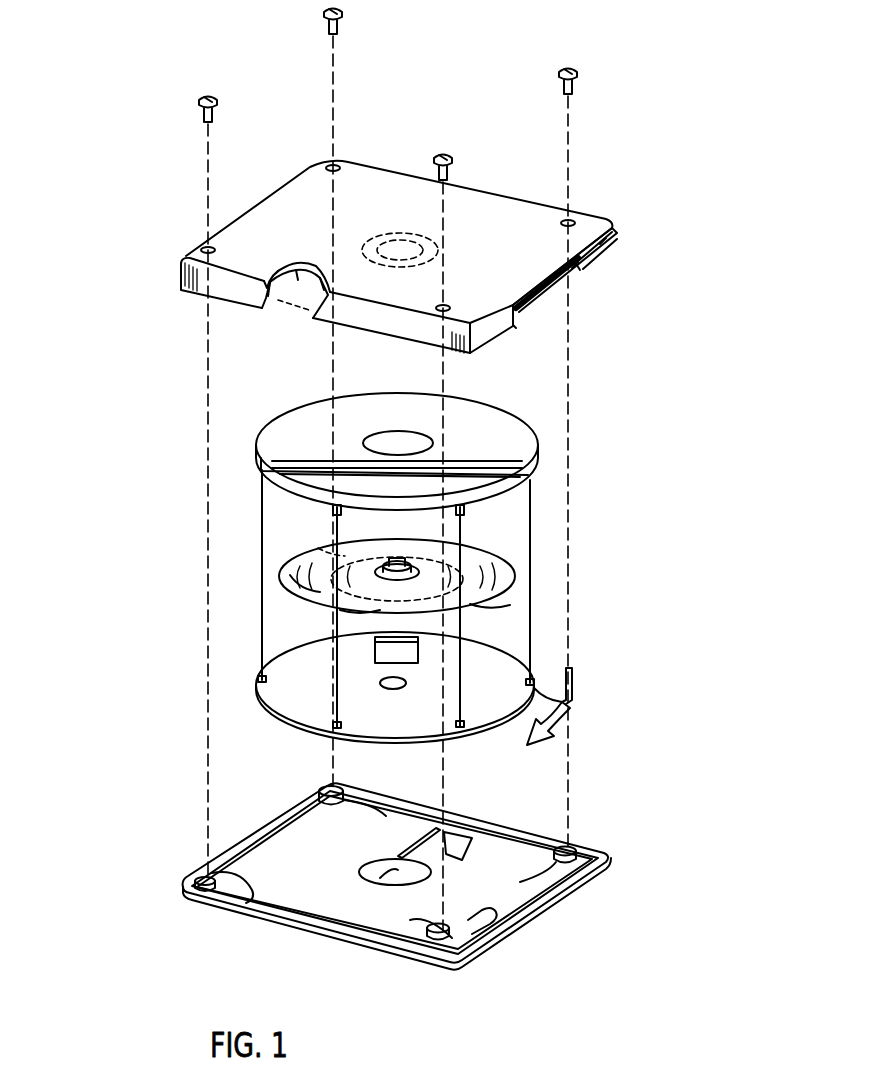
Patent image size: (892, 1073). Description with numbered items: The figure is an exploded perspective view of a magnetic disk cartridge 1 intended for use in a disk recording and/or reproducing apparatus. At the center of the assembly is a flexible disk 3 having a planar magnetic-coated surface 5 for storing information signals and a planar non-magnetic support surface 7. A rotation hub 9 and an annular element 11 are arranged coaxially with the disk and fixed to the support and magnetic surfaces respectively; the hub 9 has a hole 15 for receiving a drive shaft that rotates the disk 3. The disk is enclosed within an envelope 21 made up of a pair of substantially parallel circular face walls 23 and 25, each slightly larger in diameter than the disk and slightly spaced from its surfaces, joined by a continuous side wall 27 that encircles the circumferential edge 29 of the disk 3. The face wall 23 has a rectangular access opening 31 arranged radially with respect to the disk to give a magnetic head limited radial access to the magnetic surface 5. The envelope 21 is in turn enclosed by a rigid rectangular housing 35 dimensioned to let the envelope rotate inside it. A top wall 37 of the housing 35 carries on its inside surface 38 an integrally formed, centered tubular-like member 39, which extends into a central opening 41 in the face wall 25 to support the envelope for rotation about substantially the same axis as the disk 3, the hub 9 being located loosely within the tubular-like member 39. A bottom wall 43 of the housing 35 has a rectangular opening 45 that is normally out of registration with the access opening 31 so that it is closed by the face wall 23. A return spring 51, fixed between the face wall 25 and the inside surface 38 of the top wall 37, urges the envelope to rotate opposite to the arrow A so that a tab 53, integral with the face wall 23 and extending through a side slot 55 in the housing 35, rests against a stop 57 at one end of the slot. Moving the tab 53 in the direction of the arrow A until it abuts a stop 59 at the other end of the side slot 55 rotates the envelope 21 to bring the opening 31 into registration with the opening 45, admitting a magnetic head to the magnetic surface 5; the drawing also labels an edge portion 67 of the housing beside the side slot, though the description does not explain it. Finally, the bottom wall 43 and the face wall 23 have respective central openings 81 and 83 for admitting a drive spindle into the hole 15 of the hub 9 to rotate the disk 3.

The magnetic disk cartridge 1 is at (100, 391).
The flexible disk 3 is at (312, 610).
The magnetic-coated surface 5 is at (368, 610).
The non-magnetic support surface 7 is at (300, 588).
The rotation hub 9 is at (400, 561).
The annular element 11 is at (318, 548).
The hole 15 is at (396, 563).
The envelope 21 is at (545, 462).
The face wall 23 is at (489, 729).
The face wall 25 is at (508, 447).
The side wall 27 is at (546, 470).
The circumferential edge 29 is at (500, 606).
The access opening 31 is at (386, 655).
The housing 35 is at (612, 225).
The top wall 37 is at (567, 219).
The inside surface 38 is at (318, 282).
The tubular-like member 39 is at (364, 252).
The central opening 41 is at (410, 448).
The bottom wall 43 is at (241, 905).
The opening 45 is at (400, 852).
The return spring 51 is at (345, 472).
The tab 53 is at (577, 690).
The side slot 55 is at (548, 292).
The stop 57 is at (573, 272).
The stop 59 is at (512, 324).
The flange 67 is at (606, 248).
The central opening 81 is at (394, 868).
The central opening 83 is at (392, 683).